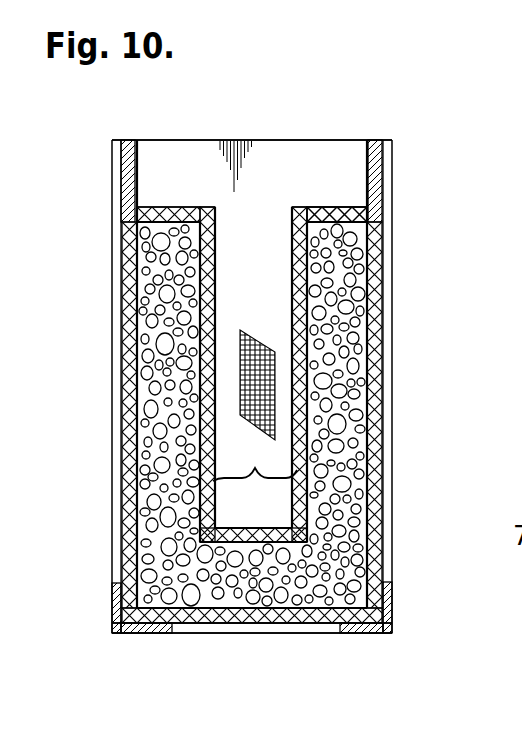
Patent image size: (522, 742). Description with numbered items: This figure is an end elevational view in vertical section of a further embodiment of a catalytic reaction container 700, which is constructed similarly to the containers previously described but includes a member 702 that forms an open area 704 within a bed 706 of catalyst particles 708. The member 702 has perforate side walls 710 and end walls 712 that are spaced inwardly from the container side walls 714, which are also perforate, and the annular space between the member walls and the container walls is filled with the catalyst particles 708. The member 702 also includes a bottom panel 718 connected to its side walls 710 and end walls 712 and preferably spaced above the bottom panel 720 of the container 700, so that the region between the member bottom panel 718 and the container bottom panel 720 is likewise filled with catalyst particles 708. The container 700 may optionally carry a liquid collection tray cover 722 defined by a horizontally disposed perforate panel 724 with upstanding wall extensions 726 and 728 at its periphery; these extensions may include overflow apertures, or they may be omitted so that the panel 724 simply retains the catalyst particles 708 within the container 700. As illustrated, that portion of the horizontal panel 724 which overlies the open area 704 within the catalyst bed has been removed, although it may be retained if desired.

The catalytic reaction container 700 is at (314, 119).
The member 702 is at (287, 235).
The area 704 is at (234, 224).
The bed 706 is at (362, 293).
The catalyst particles 708 is at (357, 338).
The perforate side walls 710 is at (252, 396).
The end walls 712 is at (240, 289).
The container side walls 714 is at (128, 398).
The bottom panel 718 is at (255, 528).
The bottom panel of the container 720 is at (259, 612).
The liquid collection tray cover 722 is at (150, 150).
The horizontally disposed perforate panel 724 is at (333, 207).
The upstanding wall extension 726 is at (275, 147).
The upstanding wall extension 728 is at (127, 166).